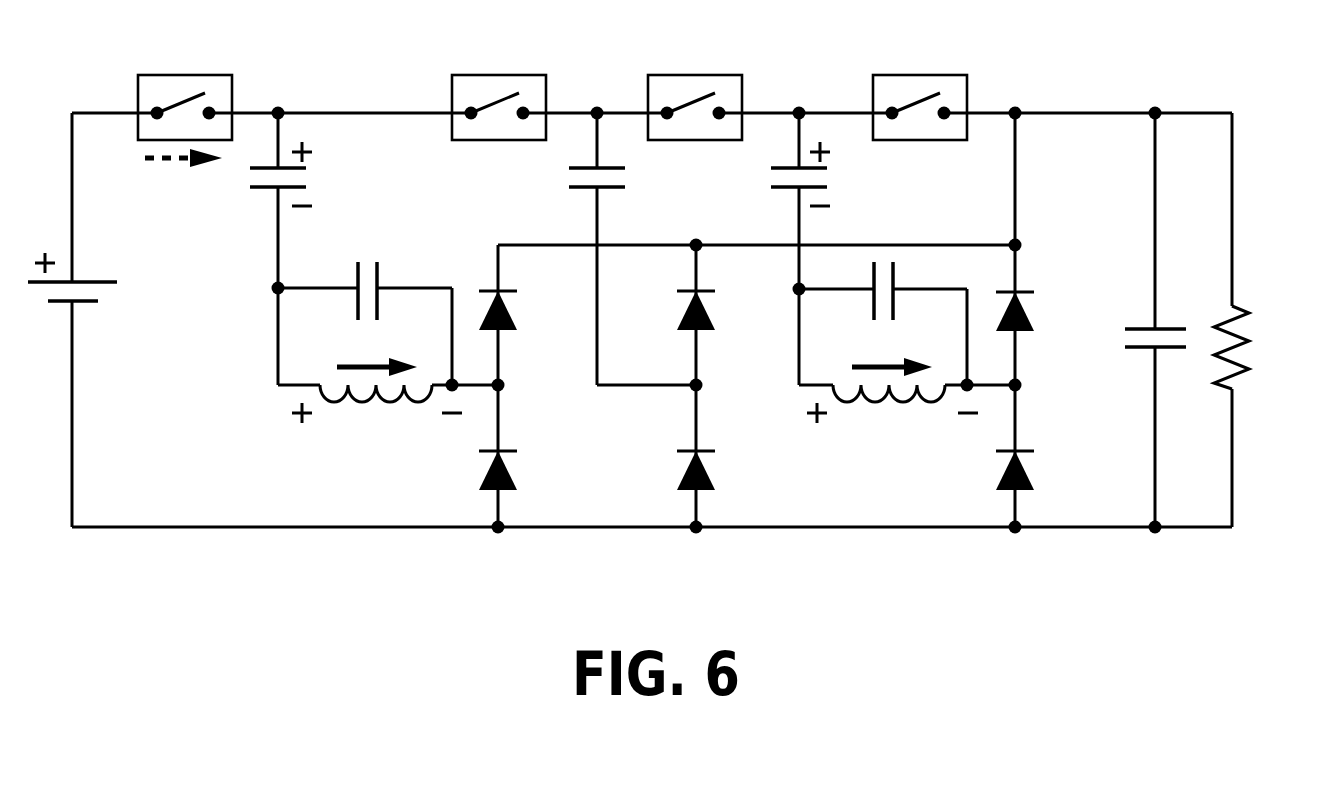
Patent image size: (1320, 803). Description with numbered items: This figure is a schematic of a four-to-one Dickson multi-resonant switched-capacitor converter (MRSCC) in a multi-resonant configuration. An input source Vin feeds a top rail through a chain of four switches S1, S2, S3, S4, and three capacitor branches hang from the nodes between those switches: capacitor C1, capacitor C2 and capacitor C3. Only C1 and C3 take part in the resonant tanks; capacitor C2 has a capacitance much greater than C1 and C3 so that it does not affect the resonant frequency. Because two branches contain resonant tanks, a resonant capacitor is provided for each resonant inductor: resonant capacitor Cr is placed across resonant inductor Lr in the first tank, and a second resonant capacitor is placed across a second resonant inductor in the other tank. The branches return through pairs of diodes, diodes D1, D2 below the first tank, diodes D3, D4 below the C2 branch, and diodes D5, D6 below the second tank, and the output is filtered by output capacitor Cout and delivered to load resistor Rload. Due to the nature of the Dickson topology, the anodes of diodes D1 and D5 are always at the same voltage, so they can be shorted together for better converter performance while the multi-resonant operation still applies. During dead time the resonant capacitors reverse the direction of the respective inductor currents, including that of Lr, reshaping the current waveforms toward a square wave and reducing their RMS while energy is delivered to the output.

The input voltage source Vin is at (77, 320).
The first switch S1 is at (185, 105).
The second switch S2 is at (499, 91).
The third switch S3 is at (695, 91).
The fourth switch S4 is at (920, 91).
The capacitor C1 is at (261, 200).
The capacitor C2 is at (613, 249).
The capacitor C3 is at (779, 201).
The resonant capacitor Cr is at (365, 323).
The resonant inductor Lr is at (388, 366).
The diode D1 is at (520, 315).
The second diode D2 is at (519, 456).
The third diode D3 is at (717, 315).
The fourth diode D4 is at (717, 456).
The diode D5 is at (1037, 249).
The sixth diode D6 is at (1037, 456).
The output capacitor Cout is at (1139, 320).
The load resistor Rload is at (1261, 320).